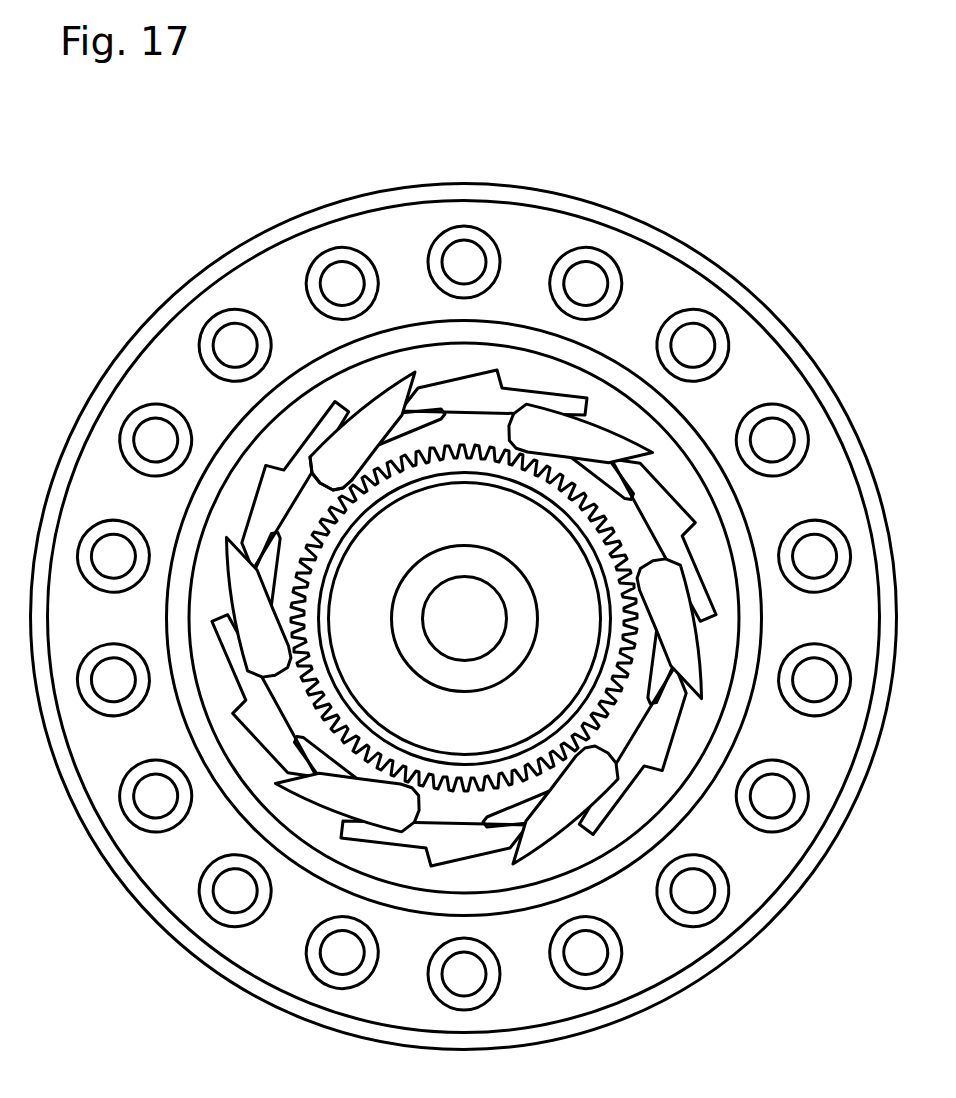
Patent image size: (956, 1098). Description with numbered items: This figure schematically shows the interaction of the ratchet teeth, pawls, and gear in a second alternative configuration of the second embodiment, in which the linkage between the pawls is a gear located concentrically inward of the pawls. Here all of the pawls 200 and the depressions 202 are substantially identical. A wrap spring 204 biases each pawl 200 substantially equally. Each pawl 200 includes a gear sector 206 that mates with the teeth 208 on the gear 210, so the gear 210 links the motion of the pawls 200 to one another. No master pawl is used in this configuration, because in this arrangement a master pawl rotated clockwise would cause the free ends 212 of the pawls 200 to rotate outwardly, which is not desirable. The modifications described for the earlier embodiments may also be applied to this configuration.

The pawl 200 is at (395, 378).
The depression 202 is at (482, 445).
The wrap spring 204 is at (262, 578).
The gear sector 206 is at (345, 449).
The teeth 208 is at (500, 370).
The gear 210 is at (582, 486).
The free end 212 is at (432, 410).